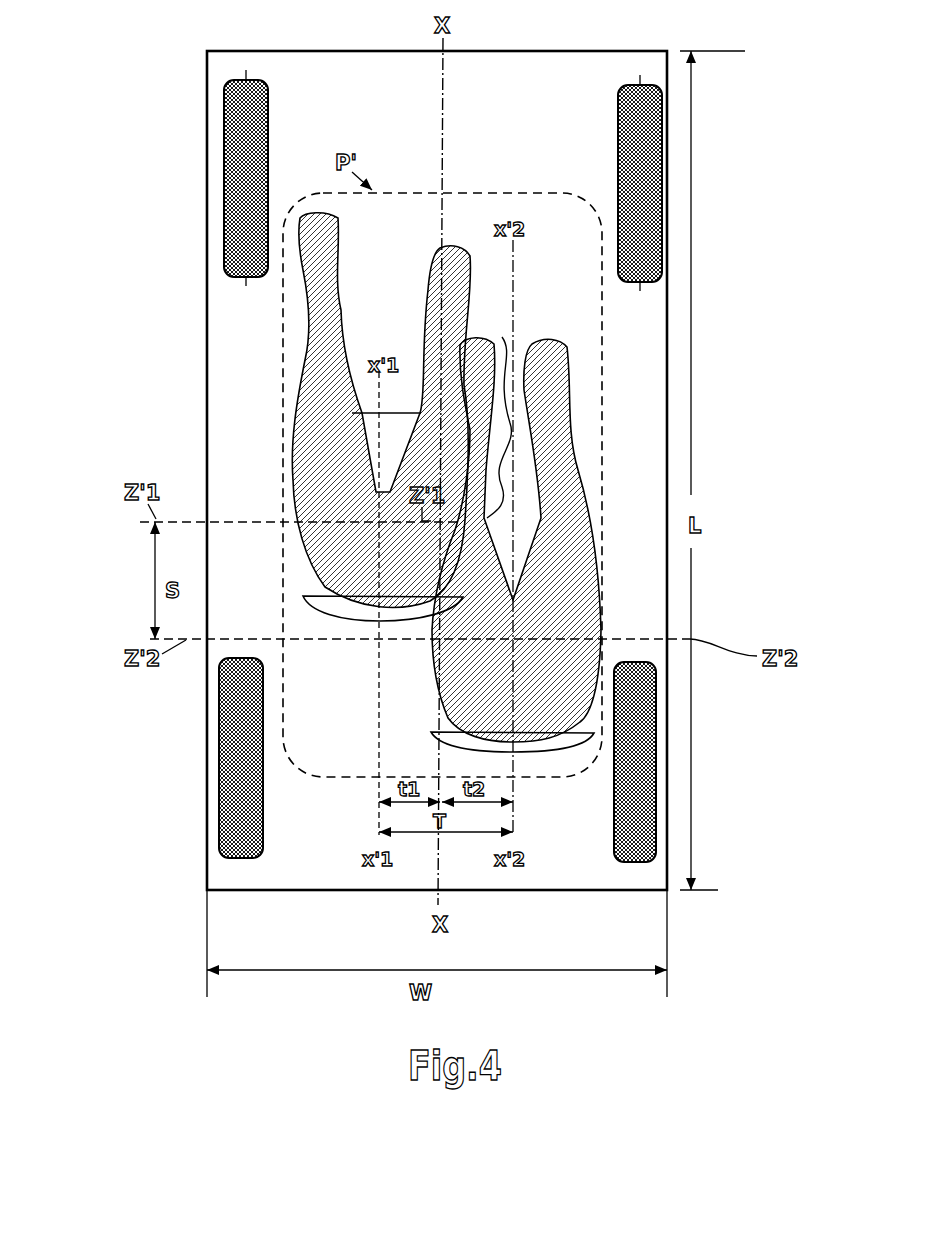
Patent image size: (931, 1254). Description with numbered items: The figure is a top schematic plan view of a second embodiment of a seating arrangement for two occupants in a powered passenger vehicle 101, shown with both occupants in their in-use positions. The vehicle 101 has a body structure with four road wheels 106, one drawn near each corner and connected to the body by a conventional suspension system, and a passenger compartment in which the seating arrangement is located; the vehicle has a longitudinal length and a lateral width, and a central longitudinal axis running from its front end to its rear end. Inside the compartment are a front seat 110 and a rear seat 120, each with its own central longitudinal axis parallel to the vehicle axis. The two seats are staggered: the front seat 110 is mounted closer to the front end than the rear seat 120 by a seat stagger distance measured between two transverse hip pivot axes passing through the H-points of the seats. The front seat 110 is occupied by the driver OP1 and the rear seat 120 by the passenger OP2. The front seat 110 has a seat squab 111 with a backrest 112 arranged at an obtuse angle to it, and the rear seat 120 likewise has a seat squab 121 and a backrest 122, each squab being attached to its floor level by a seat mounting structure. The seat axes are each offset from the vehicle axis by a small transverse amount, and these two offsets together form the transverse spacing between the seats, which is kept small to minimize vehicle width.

The powered passenger vehicle 101 is at (206, 127).
The road wheels 106 is at (225, 193).
The front seat 110 is at (364, 434).
The seat squab 111 is at (357, 413).
The backrest 112 is at (328, 618).
The rear seat 120 is at (526, 531).
The seat squab 121 is at (510, 417).
The backrest 122 is at (430, 735).
The driver OP1 is at (287, 458).
The passenger OP2 is at (592, 523).